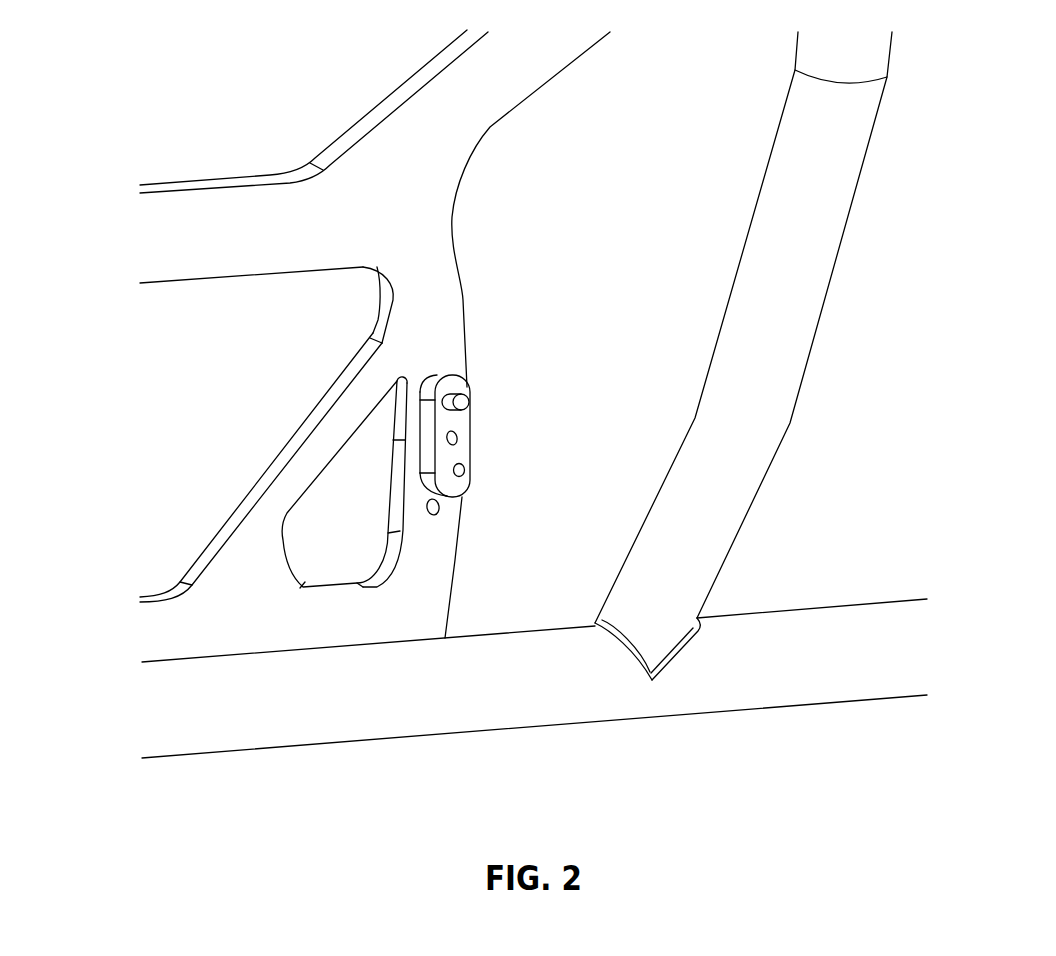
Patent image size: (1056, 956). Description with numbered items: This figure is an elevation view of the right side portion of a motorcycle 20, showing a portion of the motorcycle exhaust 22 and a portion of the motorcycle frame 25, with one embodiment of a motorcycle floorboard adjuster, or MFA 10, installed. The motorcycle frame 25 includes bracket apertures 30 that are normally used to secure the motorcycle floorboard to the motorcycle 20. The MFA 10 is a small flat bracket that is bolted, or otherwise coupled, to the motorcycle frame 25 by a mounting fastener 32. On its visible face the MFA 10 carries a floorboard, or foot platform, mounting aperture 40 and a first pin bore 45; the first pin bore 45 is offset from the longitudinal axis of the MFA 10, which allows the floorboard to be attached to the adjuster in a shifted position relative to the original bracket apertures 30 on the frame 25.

The motorcycle floorboard adjuster (MFA) 10 is at (447, 483).
The motorcycle 20 is at (953, 223).
The motorcycle exhaust 22 is at (830, 174).
The motorcycle frame 25 is at (387, 224).
The bracket aperture 30 is at (437, 513).
The mounting fastener 32 is at (467, 390).
The foot platform mounting aperture 40 is at (453, 438).
The first pin bore 45 is at (466, 473).